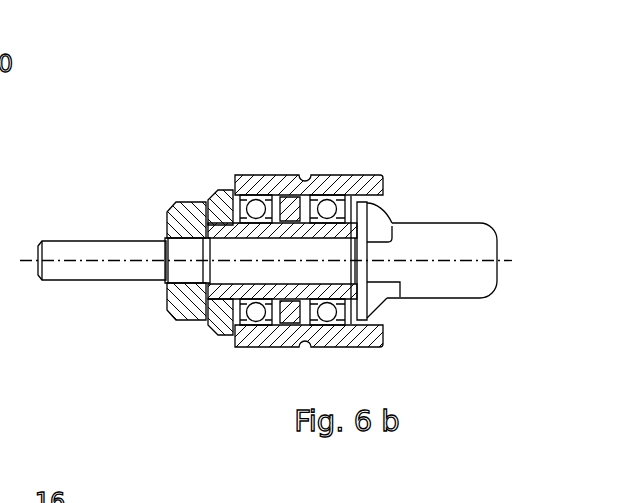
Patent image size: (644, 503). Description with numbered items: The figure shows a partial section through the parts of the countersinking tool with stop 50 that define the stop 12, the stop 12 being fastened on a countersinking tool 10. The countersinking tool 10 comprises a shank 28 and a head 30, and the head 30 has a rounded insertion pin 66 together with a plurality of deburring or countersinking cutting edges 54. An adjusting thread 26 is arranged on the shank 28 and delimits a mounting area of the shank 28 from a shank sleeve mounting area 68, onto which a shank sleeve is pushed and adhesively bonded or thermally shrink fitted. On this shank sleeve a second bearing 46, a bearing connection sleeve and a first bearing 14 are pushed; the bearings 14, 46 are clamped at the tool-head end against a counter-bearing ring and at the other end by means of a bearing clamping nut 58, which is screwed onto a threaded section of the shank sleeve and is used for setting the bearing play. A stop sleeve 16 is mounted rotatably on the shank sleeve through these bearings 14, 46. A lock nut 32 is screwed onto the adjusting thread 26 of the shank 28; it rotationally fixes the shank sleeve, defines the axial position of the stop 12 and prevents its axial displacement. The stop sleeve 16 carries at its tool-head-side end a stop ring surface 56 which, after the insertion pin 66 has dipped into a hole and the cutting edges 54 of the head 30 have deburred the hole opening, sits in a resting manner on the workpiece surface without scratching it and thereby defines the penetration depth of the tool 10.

The countersinking tool 10 is at (477, 215).
The stop 12 is at (362, 140).
The first bearing 14 is at (256, 200).
The stop sleeve 16 is at (282, 172).
The adjusting thread 26 is at (165, 240).
The shank 28 is at (83, 245).
The head 30 is at (390, 300).
The lock nut 32 is at (186, 208).
The second bearing 46 is at (324, 195).
The countersinking tool with stop 50 is at (558, 180).
The cutting edges 54 is at (390, 221).
The stop ring surface 56 is at (390, 188).
The bearing clamping nut 58 is at (218, 192).
The insertion pin 66 is at (485, 282).
The shank sleeve mounting area 68 is at (258, 273).